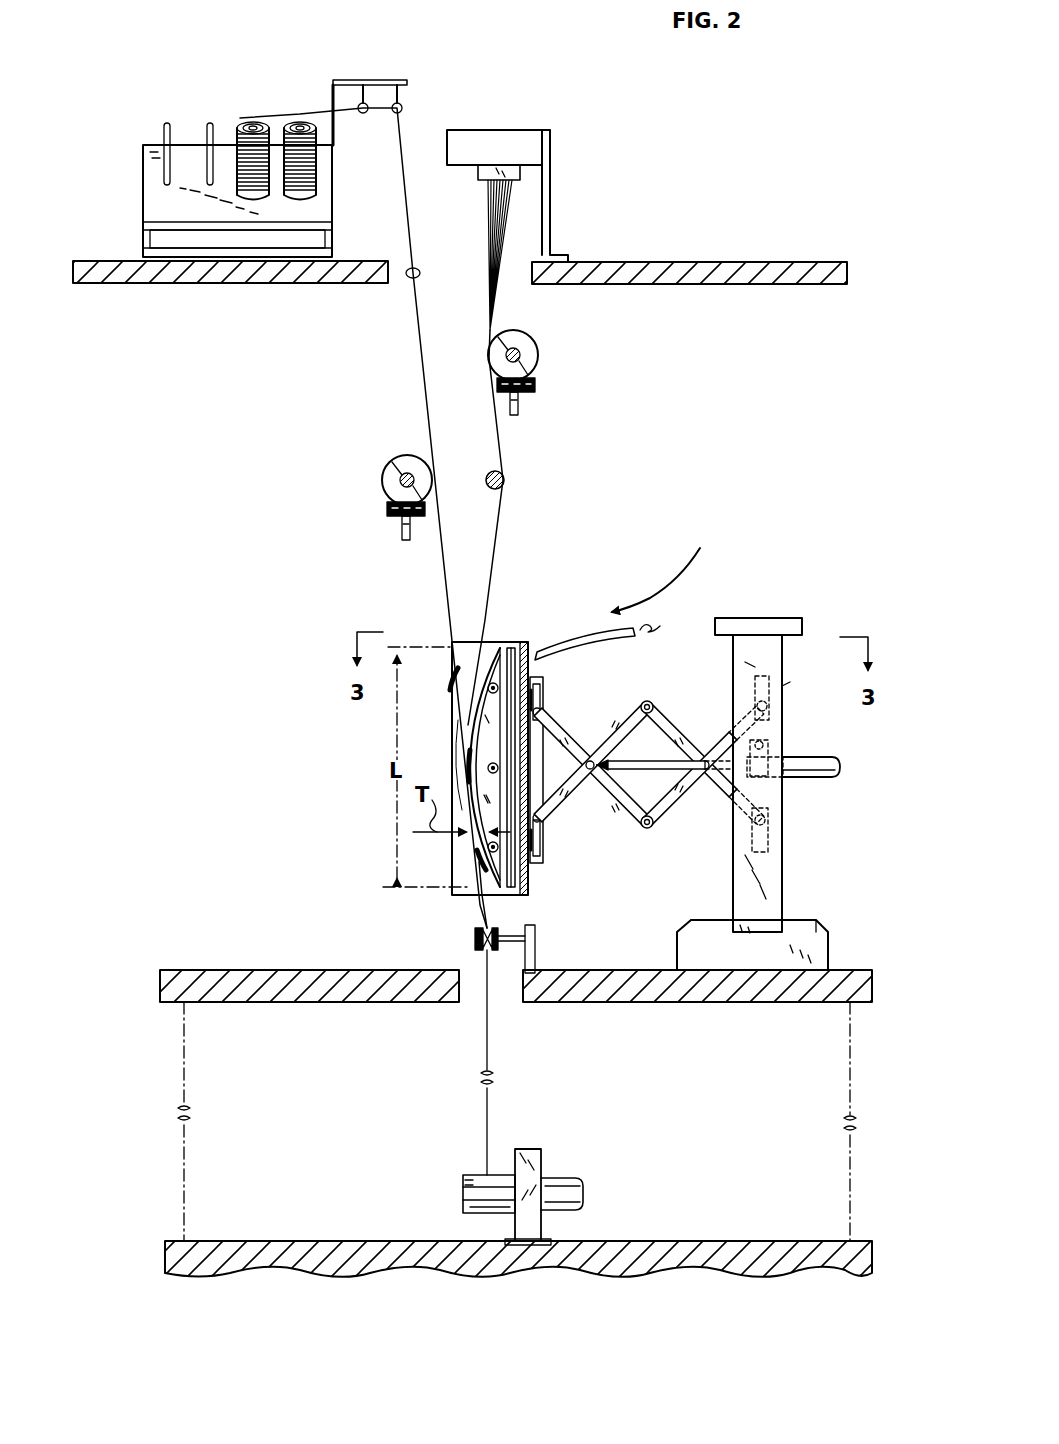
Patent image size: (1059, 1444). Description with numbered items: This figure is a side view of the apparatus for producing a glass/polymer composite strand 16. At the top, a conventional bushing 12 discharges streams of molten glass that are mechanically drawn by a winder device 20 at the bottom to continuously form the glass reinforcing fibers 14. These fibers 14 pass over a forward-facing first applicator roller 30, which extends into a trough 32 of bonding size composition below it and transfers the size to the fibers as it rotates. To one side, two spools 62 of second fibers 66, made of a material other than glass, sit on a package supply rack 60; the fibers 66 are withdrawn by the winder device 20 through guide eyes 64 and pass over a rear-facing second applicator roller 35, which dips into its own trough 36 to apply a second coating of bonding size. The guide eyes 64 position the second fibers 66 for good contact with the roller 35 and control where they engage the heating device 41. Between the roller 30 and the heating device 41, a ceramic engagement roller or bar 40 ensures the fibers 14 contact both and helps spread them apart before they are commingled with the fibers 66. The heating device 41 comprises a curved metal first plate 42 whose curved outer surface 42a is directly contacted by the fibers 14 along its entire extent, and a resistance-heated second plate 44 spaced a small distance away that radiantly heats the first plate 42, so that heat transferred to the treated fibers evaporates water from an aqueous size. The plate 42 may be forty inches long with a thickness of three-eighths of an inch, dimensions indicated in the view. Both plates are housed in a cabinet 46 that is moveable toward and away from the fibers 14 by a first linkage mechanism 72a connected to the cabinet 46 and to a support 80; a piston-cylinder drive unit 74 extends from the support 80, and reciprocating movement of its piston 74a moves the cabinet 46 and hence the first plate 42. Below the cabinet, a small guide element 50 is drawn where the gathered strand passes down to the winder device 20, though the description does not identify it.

The bushing 12 is at (508, 137).
The reinforcing fibers 14 is at (495, 552).
The glass/polymer composite strand 16 is at (490, 1036).
The winder device 20 is at (455, 1185).
The first applicator roller 30 is at (534, 344).
The trough 32 is at (536, 386).
The second applicator roller 35 is at (392, 472).
The trough 36 is at (387, 510).
The engagement roller or bar 40 is at (505, 480).
The heating device 41 is at (669, 569).
The first plate 42 is at (468, 728).
The curved outer surface 42a is at (468, 768).
The second plate 44 is at (510, 640).
The cabinet 46 is at (530, 880).
The yarn guide 50 is at (477, 937).
The package supply rack 60 is at (186, 145).
The spools 62 is at (290, 118).
The guide eyes 64 is at (368, 106).
The second fibers 66 is at (408, 204).
The first linkage mechanism 72a is at (620, 730).
The piston-cylinder drive unit 74 is at (797, 778).
The piston 74a is at (665, 770).
The support 80 is at (782, 875).